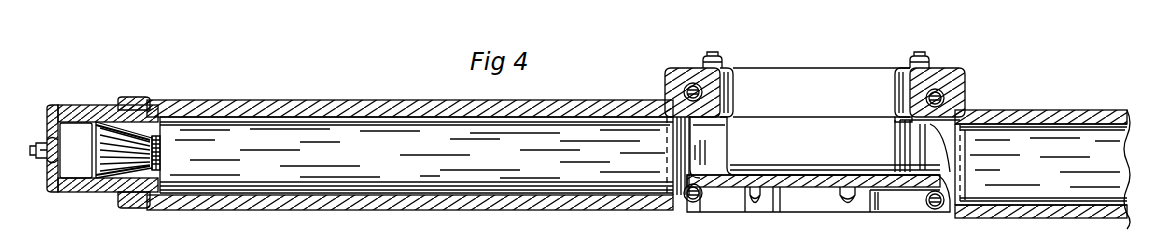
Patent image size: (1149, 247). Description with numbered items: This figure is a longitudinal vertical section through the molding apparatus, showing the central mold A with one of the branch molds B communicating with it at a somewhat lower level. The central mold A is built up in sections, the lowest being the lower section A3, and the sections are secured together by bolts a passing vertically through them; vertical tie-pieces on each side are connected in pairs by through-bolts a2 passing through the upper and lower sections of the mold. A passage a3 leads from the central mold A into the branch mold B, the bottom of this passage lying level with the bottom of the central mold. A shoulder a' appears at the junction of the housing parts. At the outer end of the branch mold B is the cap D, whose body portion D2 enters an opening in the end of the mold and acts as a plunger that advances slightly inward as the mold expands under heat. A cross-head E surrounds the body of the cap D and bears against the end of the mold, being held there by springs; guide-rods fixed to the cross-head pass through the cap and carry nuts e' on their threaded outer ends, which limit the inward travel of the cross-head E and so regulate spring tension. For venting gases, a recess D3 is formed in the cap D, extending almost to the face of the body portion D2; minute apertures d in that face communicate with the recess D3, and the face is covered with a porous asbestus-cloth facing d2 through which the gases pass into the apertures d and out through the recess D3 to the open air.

The branch mold B is at (638, 164).
The cap D is at (102, 158).
The recess D3 is at (76, 150).
The body portion of the cap D2 is at (162, 115).
The minute apertures d is at (160, 149).
The asbestus-cloth facing d2 is at (160, 169).
The nuts e' is at (25, 166).
The cross-head E is at (140, 209).
The central mold A is at (816, 126).
The bolts a is at (803, 141).
The housing shoulder a' is at (892, 130).
The through-bolts a2 is at (690, 90).
The passage a3 is at (686, 150).
The lower section of the central mold A3 is at (757, 188).